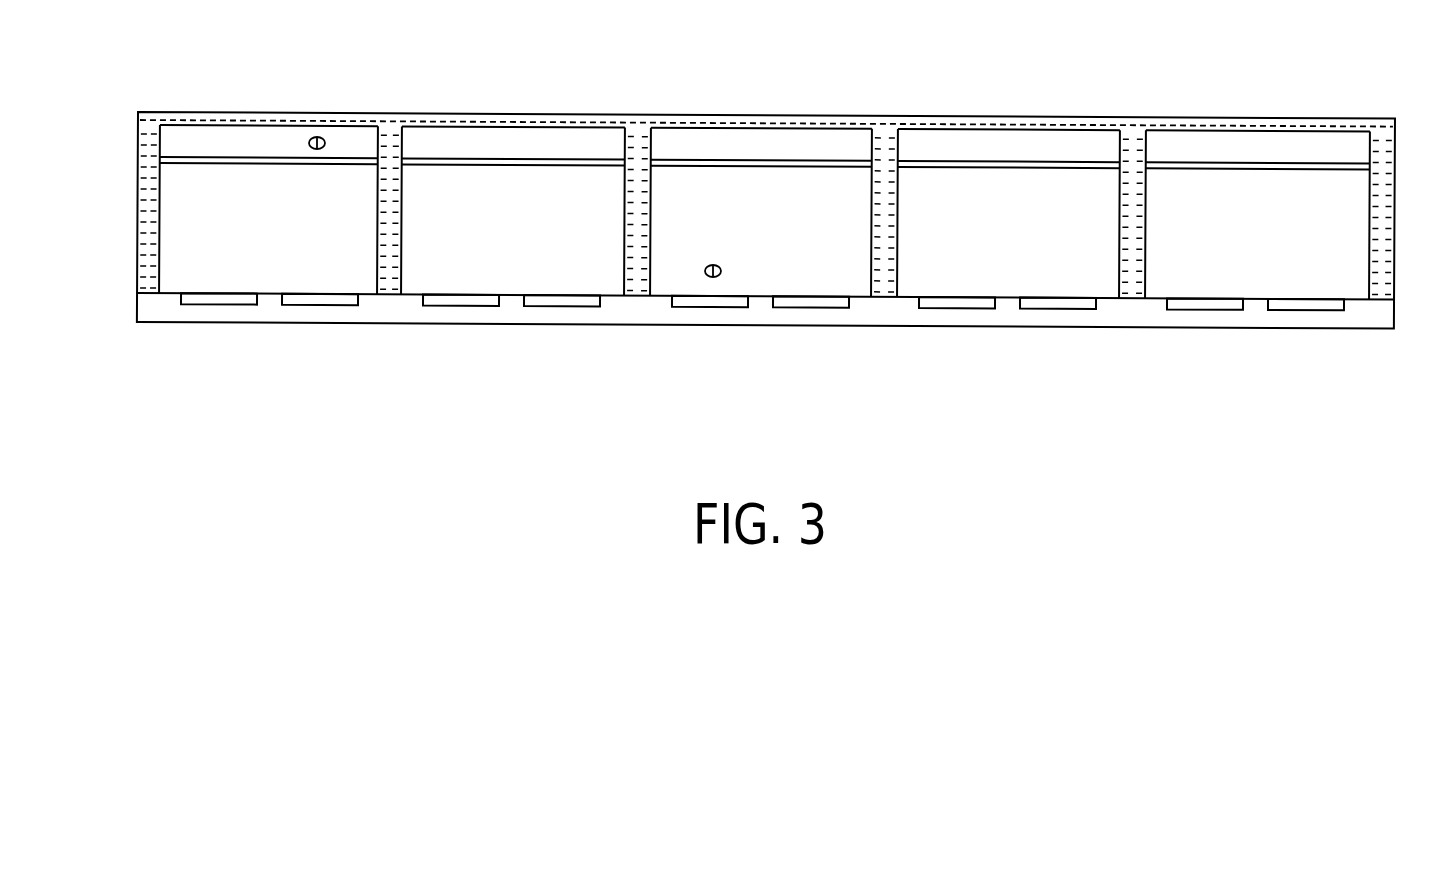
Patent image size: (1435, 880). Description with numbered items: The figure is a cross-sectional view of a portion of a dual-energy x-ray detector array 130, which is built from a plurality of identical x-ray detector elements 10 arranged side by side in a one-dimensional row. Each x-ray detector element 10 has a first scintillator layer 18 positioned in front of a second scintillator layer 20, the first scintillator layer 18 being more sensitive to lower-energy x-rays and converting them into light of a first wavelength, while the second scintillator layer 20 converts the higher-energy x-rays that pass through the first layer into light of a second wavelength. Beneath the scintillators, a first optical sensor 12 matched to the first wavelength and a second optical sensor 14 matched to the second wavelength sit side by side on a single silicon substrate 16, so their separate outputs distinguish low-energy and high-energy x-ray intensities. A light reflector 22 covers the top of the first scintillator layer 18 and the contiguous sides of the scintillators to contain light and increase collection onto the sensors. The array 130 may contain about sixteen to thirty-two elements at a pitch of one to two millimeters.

The x-ray detector element 10 is at (324, 128).
The first optical sensor 12 is at (218, 305).
The second optical sensor 14 is at (323, 305).
The silicon substrate 16 is at (1381, 329).
The first scintillator layer 18 is at (255, 130).
The second scintillator layer 20 is at (279, 279).
The light reflector 22 is at (139, 166).
The dual-energy x-ray detector array 130 is at (134, 363).